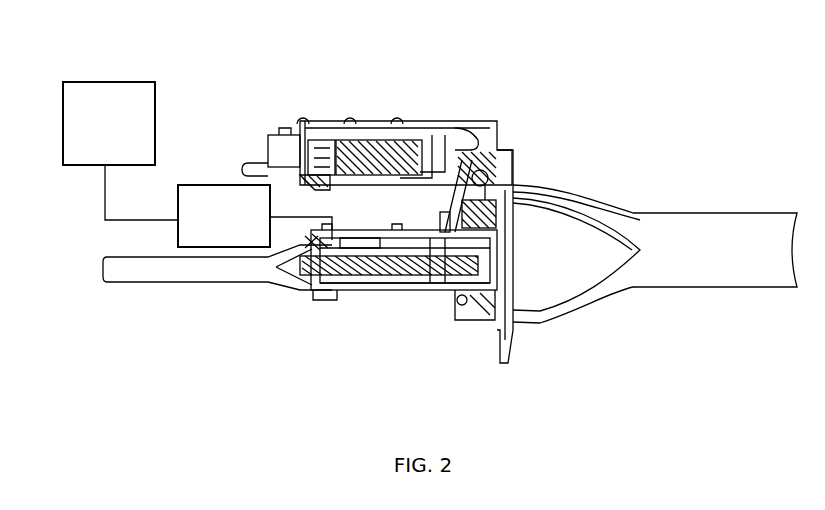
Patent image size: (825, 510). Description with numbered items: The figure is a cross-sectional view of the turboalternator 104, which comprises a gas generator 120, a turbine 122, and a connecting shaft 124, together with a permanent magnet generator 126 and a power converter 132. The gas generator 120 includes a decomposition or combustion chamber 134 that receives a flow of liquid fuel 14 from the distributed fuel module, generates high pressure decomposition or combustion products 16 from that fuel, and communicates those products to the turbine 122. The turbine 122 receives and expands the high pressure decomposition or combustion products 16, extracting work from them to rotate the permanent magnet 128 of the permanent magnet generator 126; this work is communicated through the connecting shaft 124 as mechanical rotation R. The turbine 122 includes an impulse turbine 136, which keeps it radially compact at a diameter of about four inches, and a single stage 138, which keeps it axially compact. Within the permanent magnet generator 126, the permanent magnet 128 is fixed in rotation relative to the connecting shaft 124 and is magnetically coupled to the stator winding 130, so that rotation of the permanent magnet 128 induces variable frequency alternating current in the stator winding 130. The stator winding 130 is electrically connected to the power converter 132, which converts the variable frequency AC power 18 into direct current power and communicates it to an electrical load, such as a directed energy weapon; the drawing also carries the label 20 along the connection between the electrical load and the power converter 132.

The high pressure decomposition or combustion products 16 is at (97, 80).
The liquid fuel 14 is at (218, 168).
The power converter 132 is at (190, 170).
The electrical connection 20 is at (120, 241).
The variable frequency alternating current (AC) power 18 is at (297, 205).
The turboalternator 104 is at (450, 209).
The gas generator 120 is at (365, 109).
The decomposition or combustion chamber 134 is at (425, 125).
The mechanical rotation R is at (420, 232).
The turbine 122 is at (497, 272).
The single stage 138 is at (517, 283).
The permanent magnet generator 126 is at (353, 303).
The connecting shaft 124 is at (397, 295).
The permanent magnet 128 is at (340, 298).
The stator winding 130 is at (352, 243).
The impulse turbine 136 is at (470, 318).